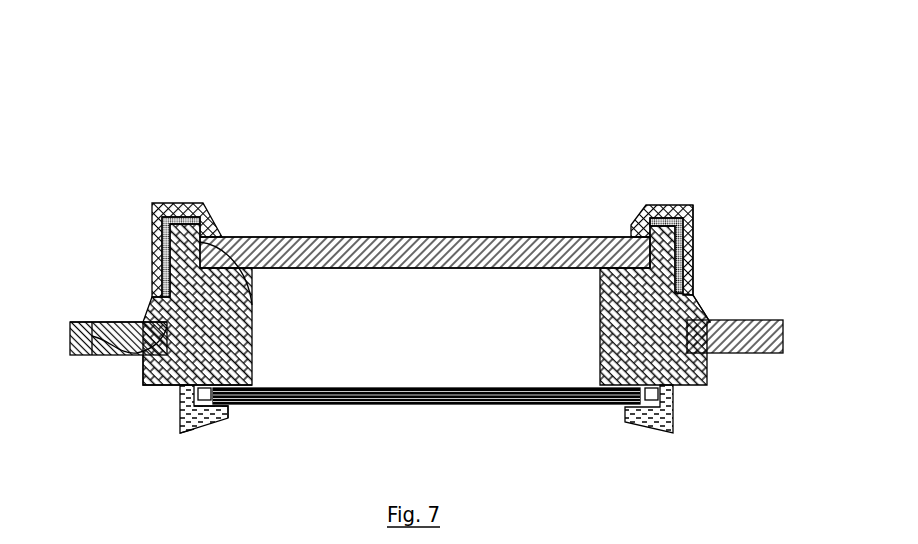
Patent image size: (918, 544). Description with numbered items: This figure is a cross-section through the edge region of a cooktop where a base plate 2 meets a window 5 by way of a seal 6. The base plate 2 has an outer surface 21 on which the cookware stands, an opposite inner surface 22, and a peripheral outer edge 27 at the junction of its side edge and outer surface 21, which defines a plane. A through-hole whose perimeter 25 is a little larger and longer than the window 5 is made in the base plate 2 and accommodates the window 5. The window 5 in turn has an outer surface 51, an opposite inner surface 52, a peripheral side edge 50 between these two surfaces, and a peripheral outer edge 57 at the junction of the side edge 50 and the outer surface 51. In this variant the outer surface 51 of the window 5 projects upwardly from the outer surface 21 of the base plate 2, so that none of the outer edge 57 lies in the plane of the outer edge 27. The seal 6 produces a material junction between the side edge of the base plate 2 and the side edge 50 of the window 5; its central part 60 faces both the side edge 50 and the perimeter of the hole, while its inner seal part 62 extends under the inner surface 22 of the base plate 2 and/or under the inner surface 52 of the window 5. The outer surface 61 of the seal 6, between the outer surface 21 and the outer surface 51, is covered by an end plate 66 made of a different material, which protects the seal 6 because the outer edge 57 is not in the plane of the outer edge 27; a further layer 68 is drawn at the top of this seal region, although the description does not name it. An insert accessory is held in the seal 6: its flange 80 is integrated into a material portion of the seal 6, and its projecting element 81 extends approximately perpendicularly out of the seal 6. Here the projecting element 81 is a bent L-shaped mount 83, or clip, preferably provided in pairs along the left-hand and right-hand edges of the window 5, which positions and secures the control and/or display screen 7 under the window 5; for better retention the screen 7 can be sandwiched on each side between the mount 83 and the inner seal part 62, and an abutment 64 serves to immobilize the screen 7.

The base plate 2 is at (111, 323).
The window 5 is at (540, 246).
The seal 6 is at (222, 194).
The screen 7 is at (397, 406).
The outer surface 21 is at (82, 322).
The inner surface 22 is at (98, 322).
The perimeter 25 is at (92, 336).
The peripheral outer edge 27 is at (703, 340).
The peripheral side edge 50 is at (252, 307).
The outer surface 51 is at (302, 237).
The inner surface 52 is at (343, 257).
The peripheral outer edge 57 is at (643, 243).
The central part 60 is at (150, 367).
The outer surface 61 is at (704, 275).
The inner seal part 62 is at (108, 386).
The abutment 64 is at (634, 226).
The end plate 66 is at (694, 236).
The top frame layer 68 is at (658, 207).
The flange 80 is at (167, 389).
The projecting element 81 is at (236, 427).
The bent L-shaped mount 83 is at (181, 433).